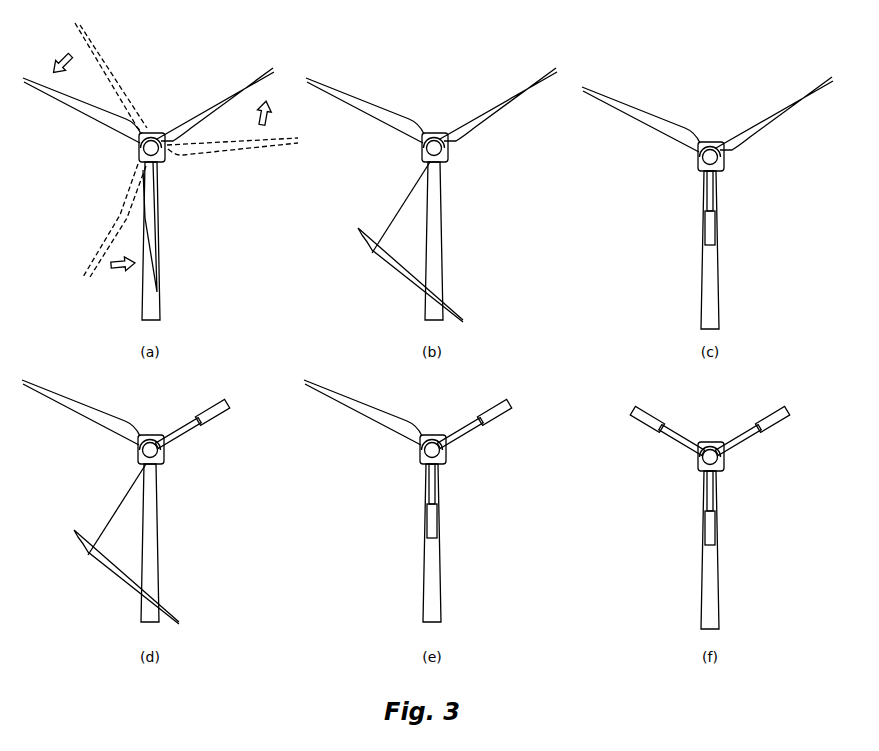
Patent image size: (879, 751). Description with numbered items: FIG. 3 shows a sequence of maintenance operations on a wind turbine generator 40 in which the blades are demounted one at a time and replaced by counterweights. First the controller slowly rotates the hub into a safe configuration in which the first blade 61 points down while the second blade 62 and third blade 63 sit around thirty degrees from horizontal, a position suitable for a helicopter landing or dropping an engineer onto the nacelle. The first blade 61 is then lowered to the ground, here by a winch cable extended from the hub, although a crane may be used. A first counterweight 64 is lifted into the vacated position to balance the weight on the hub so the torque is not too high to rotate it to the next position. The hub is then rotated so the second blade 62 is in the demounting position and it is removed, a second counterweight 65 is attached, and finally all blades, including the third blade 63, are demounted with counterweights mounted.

The wind turbine 40 is at (213, 73).
The first blade 61 is at (152, 233).
The second blade 62 is at (207, 115).
The third blade 63 is at (82, 107).
The first counterweight 64 is at (713, 233).
The second counterweight 65 is at (428, 530).